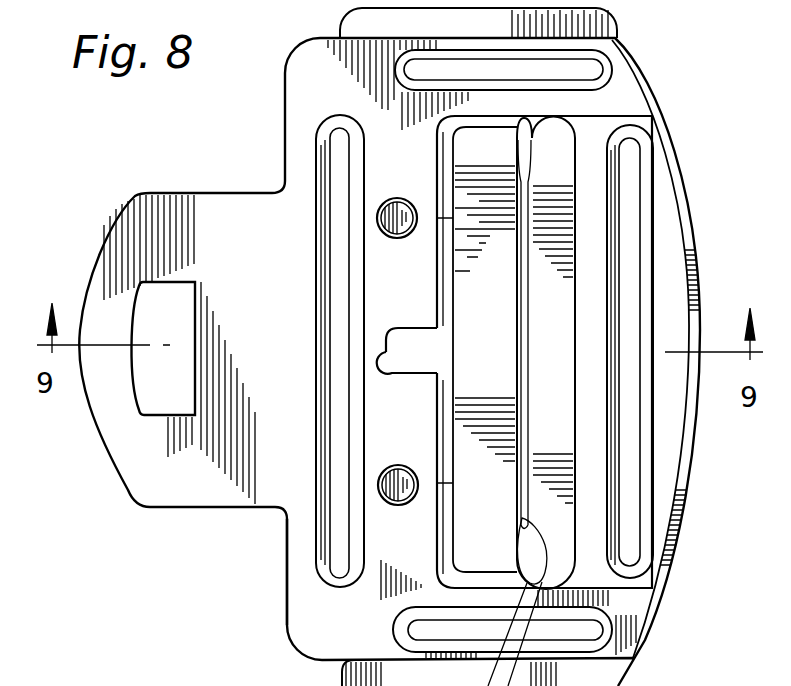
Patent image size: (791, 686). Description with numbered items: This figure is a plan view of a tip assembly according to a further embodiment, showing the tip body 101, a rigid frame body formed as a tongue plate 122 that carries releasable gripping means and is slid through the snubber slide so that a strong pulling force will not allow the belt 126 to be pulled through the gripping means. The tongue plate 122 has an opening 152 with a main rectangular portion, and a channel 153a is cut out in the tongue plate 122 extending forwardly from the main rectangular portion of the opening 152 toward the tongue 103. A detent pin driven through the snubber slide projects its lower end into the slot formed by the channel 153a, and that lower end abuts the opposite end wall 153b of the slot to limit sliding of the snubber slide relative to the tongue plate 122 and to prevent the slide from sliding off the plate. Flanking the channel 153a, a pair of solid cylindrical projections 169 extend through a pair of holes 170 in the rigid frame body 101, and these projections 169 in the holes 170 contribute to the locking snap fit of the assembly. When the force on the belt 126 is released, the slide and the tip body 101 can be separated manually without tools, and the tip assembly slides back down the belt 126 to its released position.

The tip body 101 is at (230, 216).
The tongue 103 is at (278, 311).
The tongue plate 122 is at (266, 573).
The belt 126 is at (673, 685).
The opening 152 is at (502, 378).
The channel 153a is at (410, 350).
The opposite end wall of slot 153b is at (387, 372).
The solid cylindrical projections 169 is at (393, 239).
The holes 170 is at (404, 197).